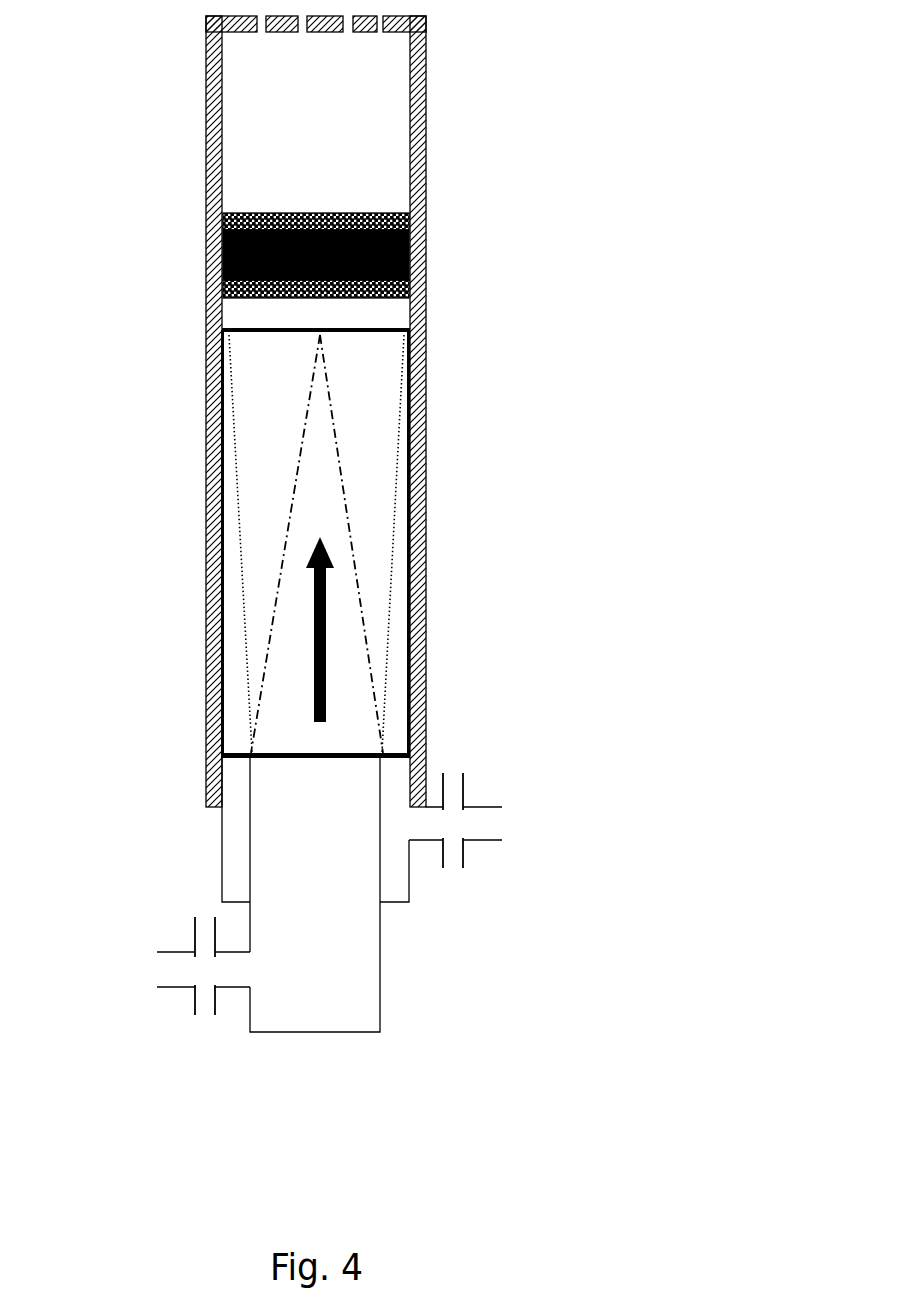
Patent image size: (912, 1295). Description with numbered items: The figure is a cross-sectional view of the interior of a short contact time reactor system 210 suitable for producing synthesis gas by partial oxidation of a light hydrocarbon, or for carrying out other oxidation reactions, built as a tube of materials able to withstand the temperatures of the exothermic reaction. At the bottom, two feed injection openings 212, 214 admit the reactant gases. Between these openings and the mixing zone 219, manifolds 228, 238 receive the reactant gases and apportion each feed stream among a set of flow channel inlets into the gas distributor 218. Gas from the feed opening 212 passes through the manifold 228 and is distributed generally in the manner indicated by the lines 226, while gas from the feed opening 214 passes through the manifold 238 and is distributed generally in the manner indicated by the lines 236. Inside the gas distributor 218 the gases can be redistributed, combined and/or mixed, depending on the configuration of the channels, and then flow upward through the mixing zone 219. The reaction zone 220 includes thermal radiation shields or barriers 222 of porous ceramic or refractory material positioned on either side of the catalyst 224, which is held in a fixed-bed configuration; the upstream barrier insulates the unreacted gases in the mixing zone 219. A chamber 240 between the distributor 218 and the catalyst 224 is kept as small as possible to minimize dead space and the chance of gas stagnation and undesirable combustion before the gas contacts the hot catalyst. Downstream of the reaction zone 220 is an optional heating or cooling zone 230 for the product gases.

The reactor system 210 is at (675, 573).
The feed injection opening 212 is at (175, 968).
The feed injection opening 214 is at (505, 818).
The gas distributor 218 is at (424, 628).
The mixing zone 219 is at (442, 460).
The reaction zone 220 is at (327, 246).
The thermal radiation shield or barrier 222 is at (250, 275).
The catalyst 224 is at (410, 267).
The lines indicating gas distribution 226 is at (240, 632).
The manifold 228 is at (337, 931).
The heating or cooling zone 230 is at (370, 112).
The lines indicating gas distribution 236 is at (289, 521).
The manifold 238 is at (232, 860).
The chamber 240 is at (222, 332).